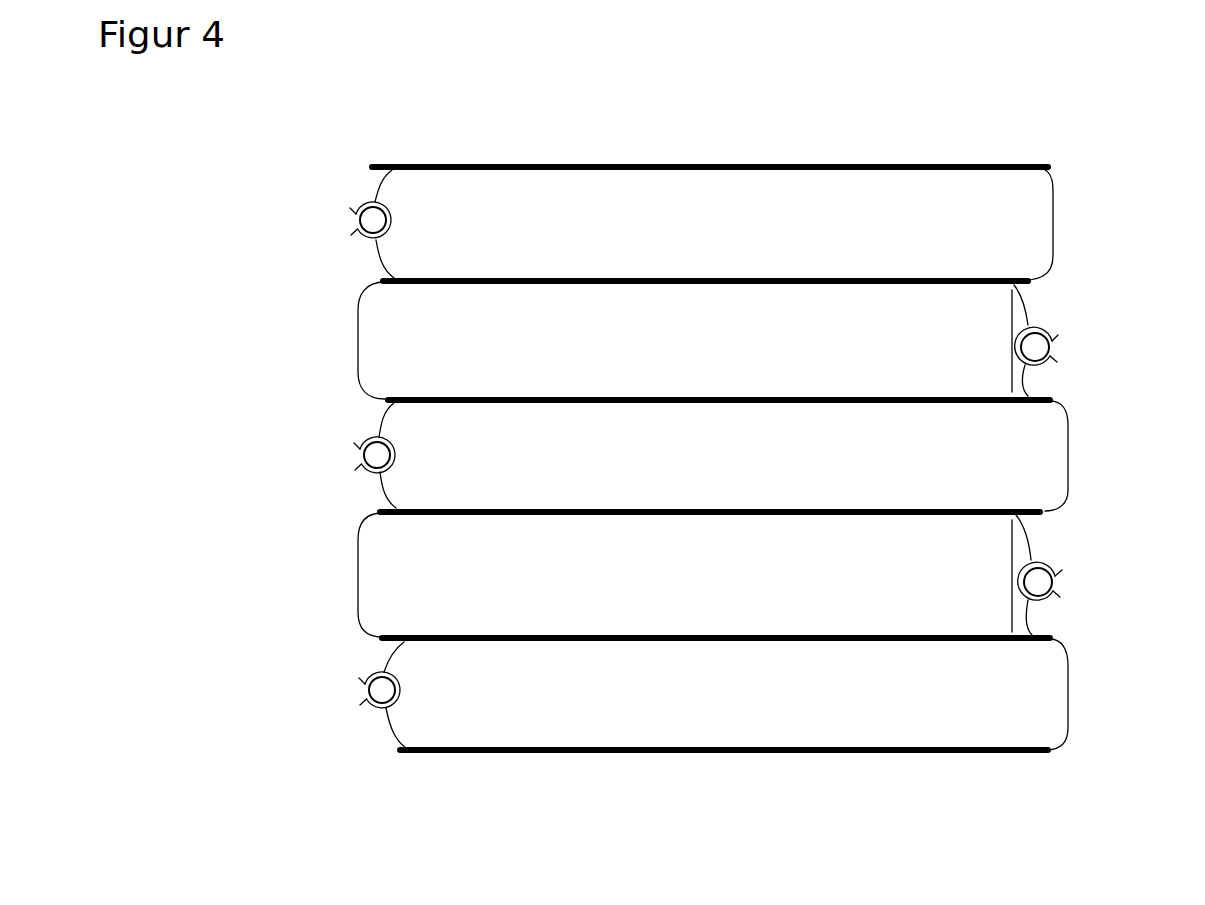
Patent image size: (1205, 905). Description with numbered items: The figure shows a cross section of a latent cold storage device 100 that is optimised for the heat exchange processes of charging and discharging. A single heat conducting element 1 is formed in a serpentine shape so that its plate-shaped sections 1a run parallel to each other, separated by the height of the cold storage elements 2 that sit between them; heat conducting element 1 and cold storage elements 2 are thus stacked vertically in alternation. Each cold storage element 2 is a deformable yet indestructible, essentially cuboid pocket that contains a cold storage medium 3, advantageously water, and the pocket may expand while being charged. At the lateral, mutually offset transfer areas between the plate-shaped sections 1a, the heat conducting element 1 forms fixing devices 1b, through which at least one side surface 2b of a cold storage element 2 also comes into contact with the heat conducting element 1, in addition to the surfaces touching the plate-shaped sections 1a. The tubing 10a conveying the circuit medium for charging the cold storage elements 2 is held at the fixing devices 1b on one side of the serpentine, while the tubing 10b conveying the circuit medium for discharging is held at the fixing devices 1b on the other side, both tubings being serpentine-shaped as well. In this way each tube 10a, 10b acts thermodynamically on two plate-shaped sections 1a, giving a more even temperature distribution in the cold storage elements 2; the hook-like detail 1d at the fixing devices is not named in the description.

The heat conducting element 1 is at (790, 752).
The plate-shaped section 1a is at (757, 398).
The fixing device 1b is at (405, 222).
The hook of holding clip 1d is at (1067, 597).
The cold storage element 2 is at (348, 580).
The side surface 2b is at (360, 537).
The cold storage medium 3 is at (719, 382).
The tubing 10a is at (372, 224).
The tubing 10b is at (1037, 350).
The latent cold storage device 100 is at (217, 782).